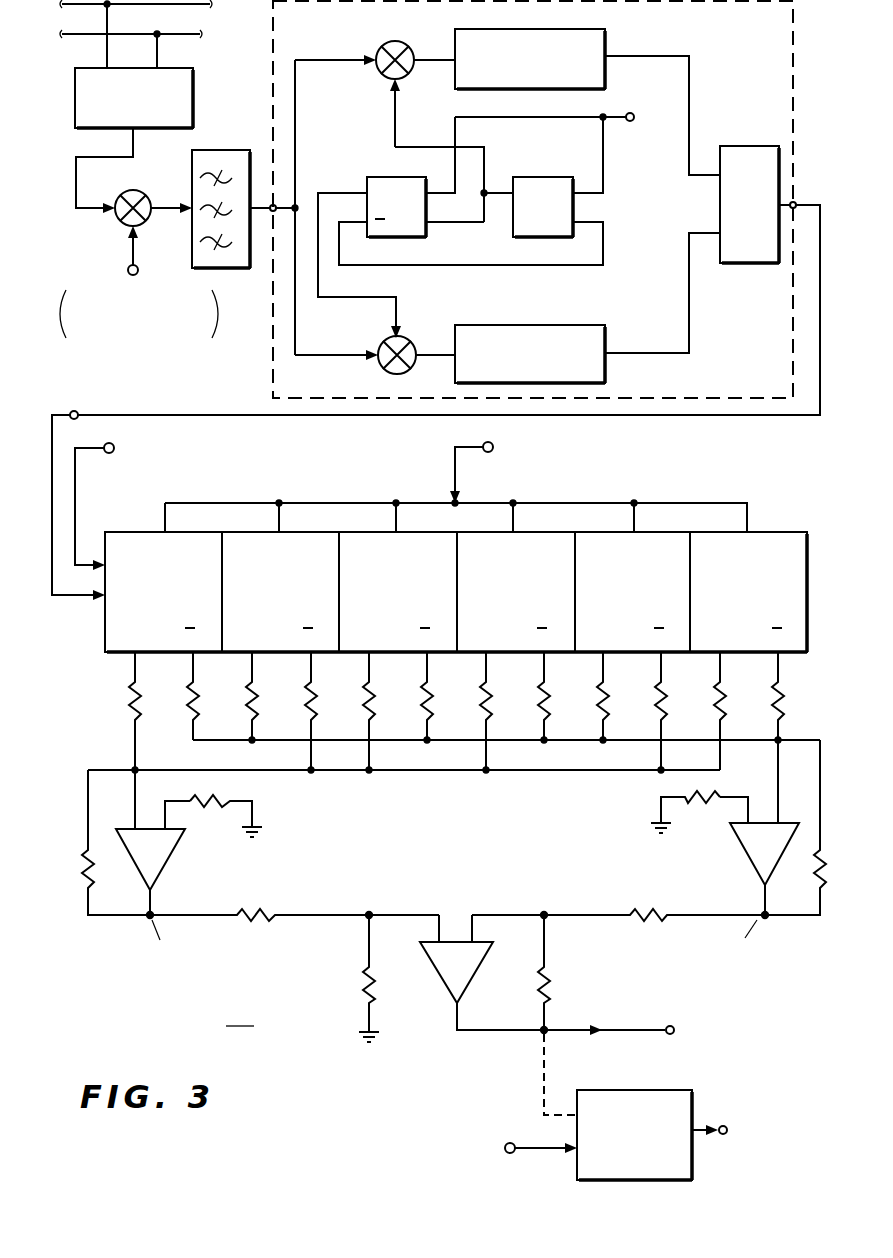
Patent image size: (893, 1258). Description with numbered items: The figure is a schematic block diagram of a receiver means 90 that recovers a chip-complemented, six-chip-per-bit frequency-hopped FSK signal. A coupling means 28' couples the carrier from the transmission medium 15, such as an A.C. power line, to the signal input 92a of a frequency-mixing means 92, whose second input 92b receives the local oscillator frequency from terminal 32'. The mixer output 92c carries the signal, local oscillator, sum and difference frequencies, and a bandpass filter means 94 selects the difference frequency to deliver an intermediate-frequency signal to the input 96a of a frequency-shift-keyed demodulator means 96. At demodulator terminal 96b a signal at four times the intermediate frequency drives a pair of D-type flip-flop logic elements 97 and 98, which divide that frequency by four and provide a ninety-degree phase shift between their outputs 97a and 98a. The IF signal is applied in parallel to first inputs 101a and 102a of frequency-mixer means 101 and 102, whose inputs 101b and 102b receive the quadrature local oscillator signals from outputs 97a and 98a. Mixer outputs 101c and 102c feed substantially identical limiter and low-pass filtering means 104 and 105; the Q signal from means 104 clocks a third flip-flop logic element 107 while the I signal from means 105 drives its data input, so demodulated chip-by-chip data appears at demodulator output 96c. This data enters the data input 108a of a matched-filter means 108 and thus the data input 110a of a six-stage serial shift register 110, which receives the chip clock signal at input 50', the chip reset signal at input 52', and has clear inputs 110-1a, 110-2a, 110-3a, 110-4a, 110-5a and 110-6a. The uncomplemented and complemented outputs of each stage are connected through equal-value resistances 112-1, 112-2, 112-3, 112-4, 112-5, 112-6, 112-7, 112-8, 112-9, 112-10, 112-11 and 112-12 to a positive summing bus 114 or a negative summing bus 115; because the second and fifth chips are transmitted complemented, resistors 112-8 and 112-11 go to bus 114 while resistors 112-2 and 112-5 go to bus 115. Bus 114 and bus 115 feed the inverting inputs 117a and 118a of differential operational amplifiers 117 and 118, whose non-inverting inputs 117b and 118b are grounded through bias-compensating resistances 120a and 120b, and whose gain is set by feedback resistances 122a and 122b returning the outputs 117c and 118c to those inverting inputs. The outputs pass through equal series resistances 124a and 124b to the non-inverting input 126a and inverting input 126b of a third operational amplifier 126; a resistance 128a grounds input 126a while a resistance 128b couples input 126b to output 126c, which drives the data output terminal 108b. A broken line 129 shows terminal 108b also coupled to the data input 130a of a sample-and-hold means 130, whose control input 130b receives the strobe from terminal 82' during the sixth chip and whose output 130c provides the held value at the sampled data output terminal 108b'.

The transmission medium 15 is at (207, 12).
The coupling means 28' is at (160, 94).
The frequency-mixing means 92 is at (115, 221).
The signal input 92a is at (114, 200).
The second input 92b is at (128, 232).
The mixer output 92c is at (160, 200).
The local oscillator input 32' is at (139, 290).
The bandpass filter means 94 is at (232, 150).
The frequency-shift-keyed demodulator means 96 is at (762, 357).
The demodulator input 96a is at (272, 214).
The demodulator input terminal 96b is at (635, 120).
The demodulator means output 96c is at (794, 200).
The frequency-mixer means 101 is at (393, 41).
The first input 101a is at (378, 50).
The input 101b is at (380, 86).
The mixer output 101c is at (418, 52).
The limiter and low-pass filtering means 104 is at (605, 32).
The D-type flip-flop logic element 97 is at (539, 177).
The output 97a is at (400, 130).
The D-type flip-flop logic element 98 is at (382, 177).
The output 98a is at (402, 302).
The frequency-mixer means 102 is at (383, 374).
The first input 102a is at (370, 360).
The input 102b is at (380, 338).
The mixer output 102c is at (426, 344).
The limiter and low-pass filtering means 105 is at (606, 380).
The third flip-flop logic element 107 is at (746, 146).
The matched-filter means 108 is at (93, 846).
The data input 108a is at (78, 410).
The data output terminal 108b is at (665, 1012).
The sampled data output terminal 108b' is at (776, 1117).
The chip clock input 50' is at (206, 501).
The chip reset input 52' is at (563, 463).
The serial shift register 110 is at (758, 524).
The data input 110a is at (104, 602).
The clear input 110-1a is at (184, 530).
The clear input 110-2a is at (298, 530).
The clear input 110-3a is at (416, 530).
The clear input 110-4a is at (535, 530).
The clear input 110-5a is at (652, 530).
The clear input 110-6a is at (751, 508).
The resistance 112-1 is at (132, 700).
The resistance 112-2 is at (246, 696).
The resistance 112-3 is at (363, 696).
The resistance 112-4 is at (479, 696).
The resistance 112-5 is at (596, 696).
The resistance 112-6 is at (714, 696).
The resistance 112-7 is at (186, 696).
The resistance 112-8 is at (304, 696).
The resistance 112-9 is at (421, 696).
The resistance 112-10 is at (538, 696).
The resistance 112-11 is at (655, 696).
The resistance 112-12 is at (788, 694).
The positive summing bus 114 is at (434, 772).
The negative summing bus 115 is at (764, 744).
The differential operational amplifier 117 is at (180, 864).
The inverting input 117a is at (136, 813).
The non-inverting input 117b is at (164, 813).
The output 117c is at (158, 914).
The differential operational amplifier 118 is at (738, 850).
The inverting input 118a is at (772, 818).
The non-inverting input 118b is at (754, 812).
The output 118c is at (760, 900).
The resistance element 120a is at (244, 800).
The resistance element 120b is at (682, 794).
The gain-setting resistance 122a is at (94, 883).
The gain-setting resistance 122b is at (812, 881).
The series resistance 124a is at (252, 924).
The series resistance 124b is at (656, 920).
The third differential operational amplifier 126 is at (474, 978).
The non-inverting input 126a is at (438, 912).
The inverting input 126b is at (474, 914).
The output 126c is at (452, 1008).
The resistance element 128a is at (362, 970).
The resistance element 128b is at (548, 968).
The broken line 129 is at (542, 1078).
The sample-and-hold means 130 is at (644, 1090).
The data input 130a is at (570, 1112).
The sampling control input 130b is at (573, 1152).
The output 130c is at (700, 1124).
The strobe terminal 82' is at (426, 1141).
The receiver means 90 is at (506, 883).